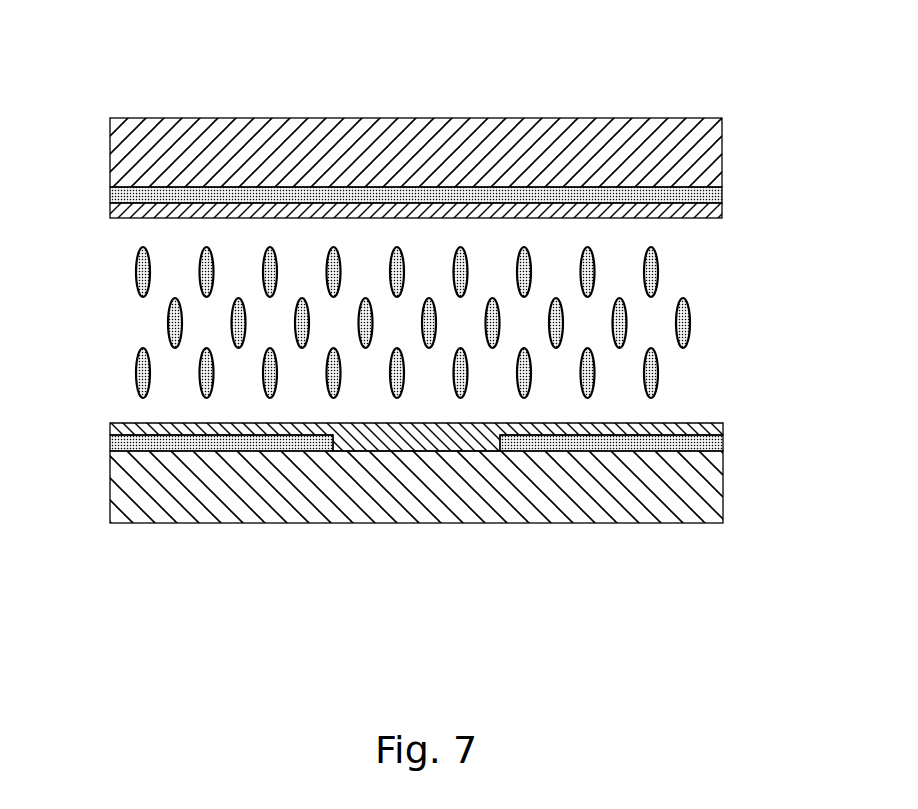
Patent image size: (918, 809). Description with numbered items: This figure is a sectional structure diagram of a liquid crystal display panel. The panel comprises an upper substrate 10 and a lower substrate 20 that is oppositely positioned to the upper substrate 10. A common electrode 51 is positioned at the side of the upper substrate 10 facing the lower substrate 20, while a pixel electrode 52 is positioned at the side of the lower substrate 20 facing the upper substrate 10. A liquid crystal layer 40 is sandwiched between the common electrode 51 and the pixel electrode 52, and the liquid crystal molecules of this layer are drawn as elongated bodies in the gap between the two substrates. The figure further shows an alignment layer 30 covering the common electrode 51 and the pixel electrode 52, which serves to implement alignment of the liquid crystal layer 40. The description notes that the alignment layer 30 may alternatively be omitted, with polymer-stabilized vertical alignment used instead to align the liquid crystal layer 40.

The upper substrate 10 is at (706, 145).
The lower substrate 20 is at (655, 508).
The alignment layer 30 is at (122, 209).
The liquid crystal layer 40 is at (680, 325).
The common electrode 51 is at (703, 197).
The pixel electrode 52 is at (705, 443).